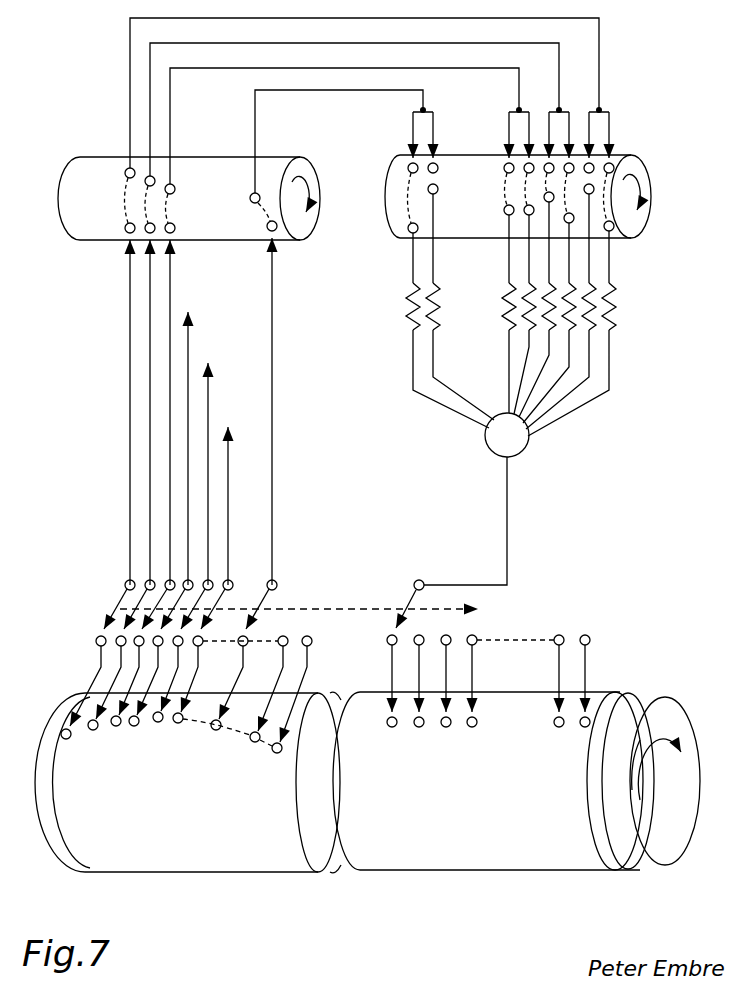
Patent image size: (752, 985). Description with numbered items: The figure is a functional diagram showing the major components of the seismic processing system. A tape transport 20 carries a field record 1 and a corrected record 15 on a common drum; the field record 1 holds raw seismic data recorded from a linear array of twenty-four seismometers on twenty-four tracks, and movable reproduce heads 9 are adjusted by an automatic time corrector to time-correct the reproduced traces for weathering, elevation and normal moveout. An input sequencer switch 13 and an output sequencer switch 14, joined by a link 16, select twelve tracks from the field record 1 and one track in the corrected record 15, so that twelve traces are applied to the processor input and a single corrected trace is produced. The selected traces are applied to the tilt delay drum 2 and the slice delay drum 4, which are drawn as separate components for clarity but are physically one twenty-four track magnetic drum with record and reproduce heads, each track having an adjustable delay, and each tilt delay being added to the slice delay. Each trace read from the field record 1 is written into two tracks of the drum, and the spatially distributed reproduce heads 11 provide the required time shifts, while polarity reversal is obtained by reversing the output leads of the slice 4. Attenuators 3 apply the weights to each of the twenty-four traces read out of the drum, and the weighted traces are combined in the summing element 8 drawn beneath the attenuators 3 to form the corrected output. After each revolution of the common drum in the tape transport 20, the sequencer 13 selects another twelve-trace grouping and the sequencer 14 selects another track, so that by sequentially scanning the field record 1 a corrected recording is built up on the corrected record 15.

The field record 1 is at (152, 853).
The tilt delay drum 2 is at (72, 173).
The attenuators 3 is at (614, 303).
The slice delay drum 4 is at (531, 212).
The summing amplifier 8 is at (528, 445).
The movable reproduce heads 9 is at (60, 728).
The reproduce heads 11 is at (614, 231).
The input sequencer switch 13 is at (112, 613).
The output sequencer switch 14 is at (414, 591).
The corrected record 15 is at (474, 853).
The link 16 is at (330, 607).
The tape transport 20 is at (663, 718).